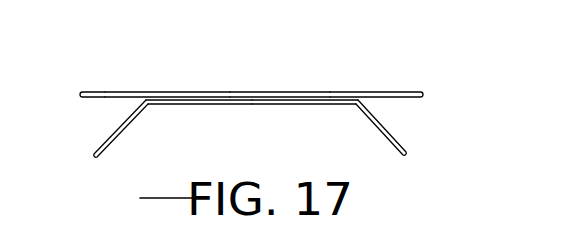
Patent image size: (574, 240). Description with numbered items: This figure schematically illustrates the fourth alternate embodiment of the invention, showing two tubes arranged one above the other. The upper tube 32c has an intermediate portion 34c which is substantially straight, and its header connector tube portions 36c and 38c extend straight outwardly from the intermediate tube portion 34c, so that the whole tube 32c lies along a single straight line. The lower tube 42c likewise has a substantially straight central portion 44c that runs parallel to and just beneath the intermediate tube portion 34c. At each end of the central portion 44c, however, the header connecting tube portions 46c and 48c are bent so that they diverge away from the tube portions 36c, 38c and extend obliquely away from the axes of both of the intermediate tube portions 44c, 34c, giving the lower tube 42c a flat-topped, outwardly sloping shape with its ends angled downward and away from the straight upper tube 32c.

The tube 32c is at (192, 94).
The intermediate portion 34c is at (267, 94).
The header connector tube portion 36c is at (103, 94).
The header connector tube portion 38c is at (398, 93).
The tube 42c is at (195, 105).
The central portion 44c is at (275, 105).
The header connecting tube portion 46c is at (117, 137).
The header connecting tube portion 48c is at (390, 143).